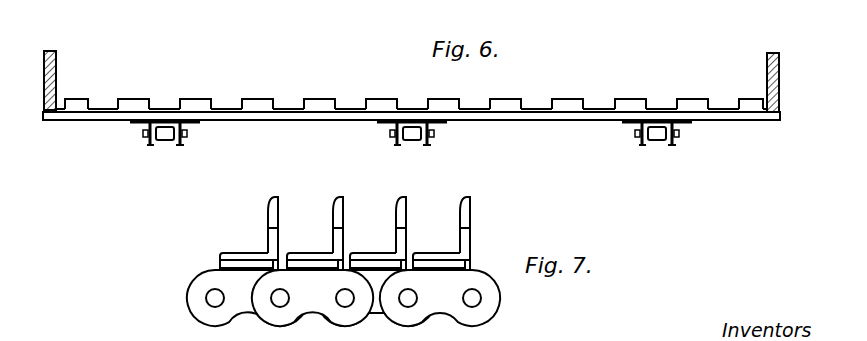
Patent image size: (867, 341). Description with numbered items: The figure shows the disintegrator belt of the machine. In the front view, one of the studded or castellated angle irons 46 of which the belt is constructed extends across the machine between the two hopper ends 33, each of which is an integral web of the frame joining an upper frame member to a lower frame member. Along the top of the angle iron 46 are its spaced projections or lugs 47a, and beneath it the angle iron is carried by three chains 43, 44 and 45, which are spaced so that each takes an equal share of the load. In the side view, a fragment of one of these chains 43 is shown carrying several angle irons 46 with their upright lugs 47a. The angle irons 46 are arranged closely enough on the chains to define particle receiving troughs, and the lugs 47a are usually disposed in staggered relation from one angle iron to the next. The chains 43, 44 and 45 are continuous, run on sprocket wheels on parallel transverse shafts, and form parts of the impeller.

In FIG. 6, the hopper end 33 is at (65, 55).
In FIG. 6, the chain 43 is at (165, 143).
In FIG. 7, the chain 43 is at (317, 303).
In FIG. 6, the chain 44 is at (412, 143).
In FIG. 6, the chain 45 is at (657, 143).
In FIG. 6, the angle iron 46 is at (293, 108).
In FIG. 7, the angle iron 46 is at (268, 233).
In FIG. 6, the lug 47a is at (258, 112).
In FIG. 7, the lug 47a is at (404, 208).